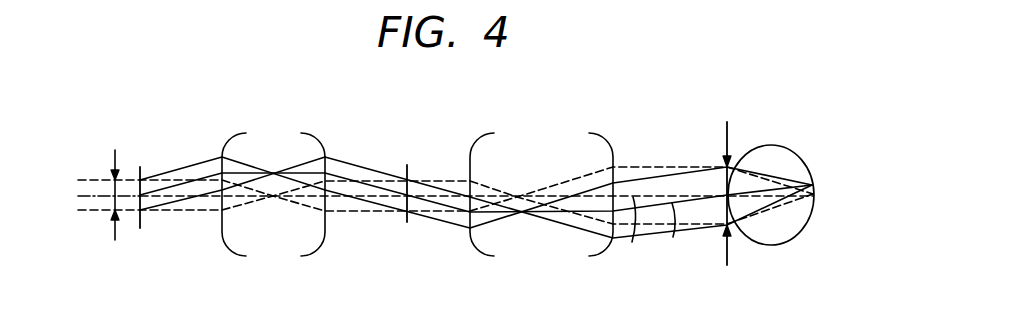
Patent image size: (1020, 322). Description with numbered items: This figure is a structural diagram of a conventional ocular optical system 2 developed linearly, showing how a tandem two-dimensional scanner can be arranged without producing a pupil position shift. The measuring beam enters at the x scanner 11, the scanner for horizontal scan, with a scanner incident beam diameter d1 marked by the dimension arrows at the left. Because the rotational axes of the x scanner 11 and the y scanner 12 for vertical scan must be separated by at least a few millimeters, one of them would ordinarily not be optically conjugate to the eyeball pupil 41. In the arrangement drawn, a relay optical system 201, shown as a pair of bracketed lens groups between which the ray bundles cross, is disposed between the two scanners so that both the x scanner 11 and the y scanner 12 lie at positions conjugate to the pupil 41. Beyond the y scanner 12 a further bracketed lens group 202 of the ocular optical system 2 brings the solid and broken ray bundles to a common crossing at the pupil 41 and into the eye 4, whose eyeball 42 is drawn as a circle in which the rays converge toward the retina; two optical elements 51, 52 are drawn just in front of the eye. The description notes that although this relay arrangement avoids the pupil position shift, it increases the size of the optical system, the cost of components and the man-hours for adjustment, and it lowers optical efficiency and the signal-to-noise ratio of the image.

The ocular optical system 2 is at (225, 126).
The observer's eye 4 is at (810, 126).
The x scanner 11 is at (141, 218).
The y scanner 12 is at (407, 218).
The eyeball pupil 41 is at (716, 229).
The eyeball 42 is at (795, 240).
The first surface (window) 51 is at (632, 243).
The second surface (window) 52 is at (673, 238).
The relay optical system 201 is at (270, 241).
The second lens group 202 is at (542, 243).
The scanner incident beam diameter d1 is at (103, 195).